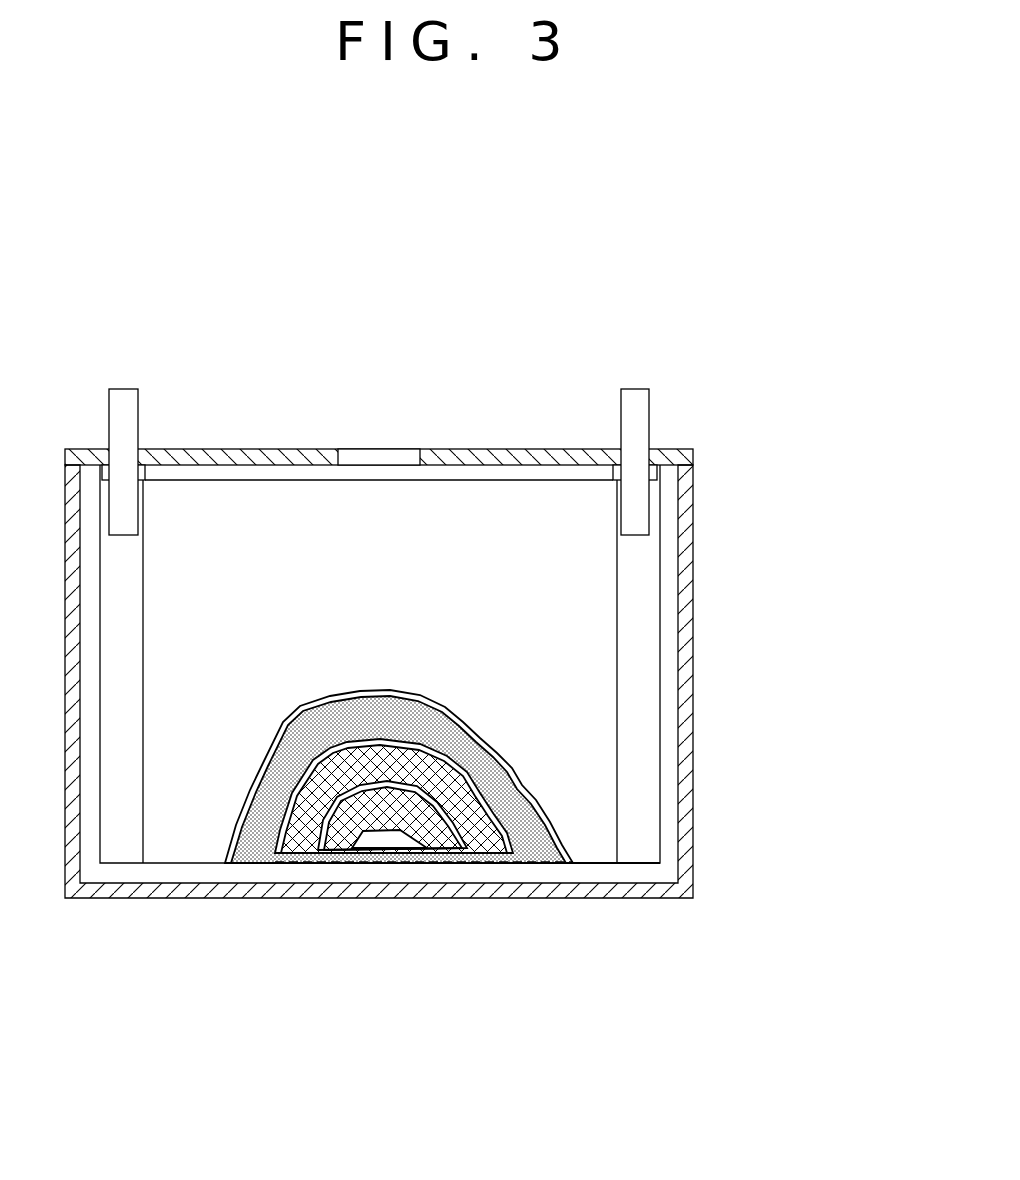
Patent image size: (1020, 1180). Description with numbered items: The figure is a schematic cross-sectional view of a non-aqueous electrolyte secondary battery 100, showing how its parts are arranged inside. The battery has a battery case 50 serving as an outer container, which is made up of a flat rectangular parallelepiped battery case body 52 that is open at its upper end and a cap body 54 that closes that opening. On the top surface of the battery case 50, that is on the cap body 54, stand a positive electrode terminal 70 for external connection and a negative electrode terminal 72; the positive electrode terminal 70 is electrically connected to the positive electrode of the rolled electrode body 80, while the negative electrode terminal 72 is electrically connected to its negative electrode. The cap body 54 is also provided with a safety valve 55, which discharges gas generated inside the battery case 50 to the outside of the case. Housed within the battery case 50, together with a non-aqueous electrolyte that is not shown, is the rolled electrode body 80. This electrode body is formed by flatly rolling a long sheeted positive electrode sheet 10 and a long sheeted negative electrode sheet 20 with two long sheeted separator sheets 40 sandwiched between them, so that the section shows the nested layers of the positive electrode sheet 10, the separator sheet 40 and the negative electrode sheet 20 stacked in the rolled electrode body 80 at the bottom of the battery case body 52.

The non-aqueous electrolyte secondary battery 100 is at (690, 306).
The battery case 50 is at (694, 672).
The battery case body 52 is at (686, 838).
The cap body 54 is at (530, 458).
The safety valve 55 is at (370, 458).
The positive electrode terminal 70 is at (121, 398).
The negative electrode terminal 72 is at (632, 402).
The rolled electrode body 80 is at (590, 865).
The positive electrode sheet 10 is at (242, 864).
The negative electrode sheet 20 is at (343, 851).
The separator sheet 40 is at (183, 838).